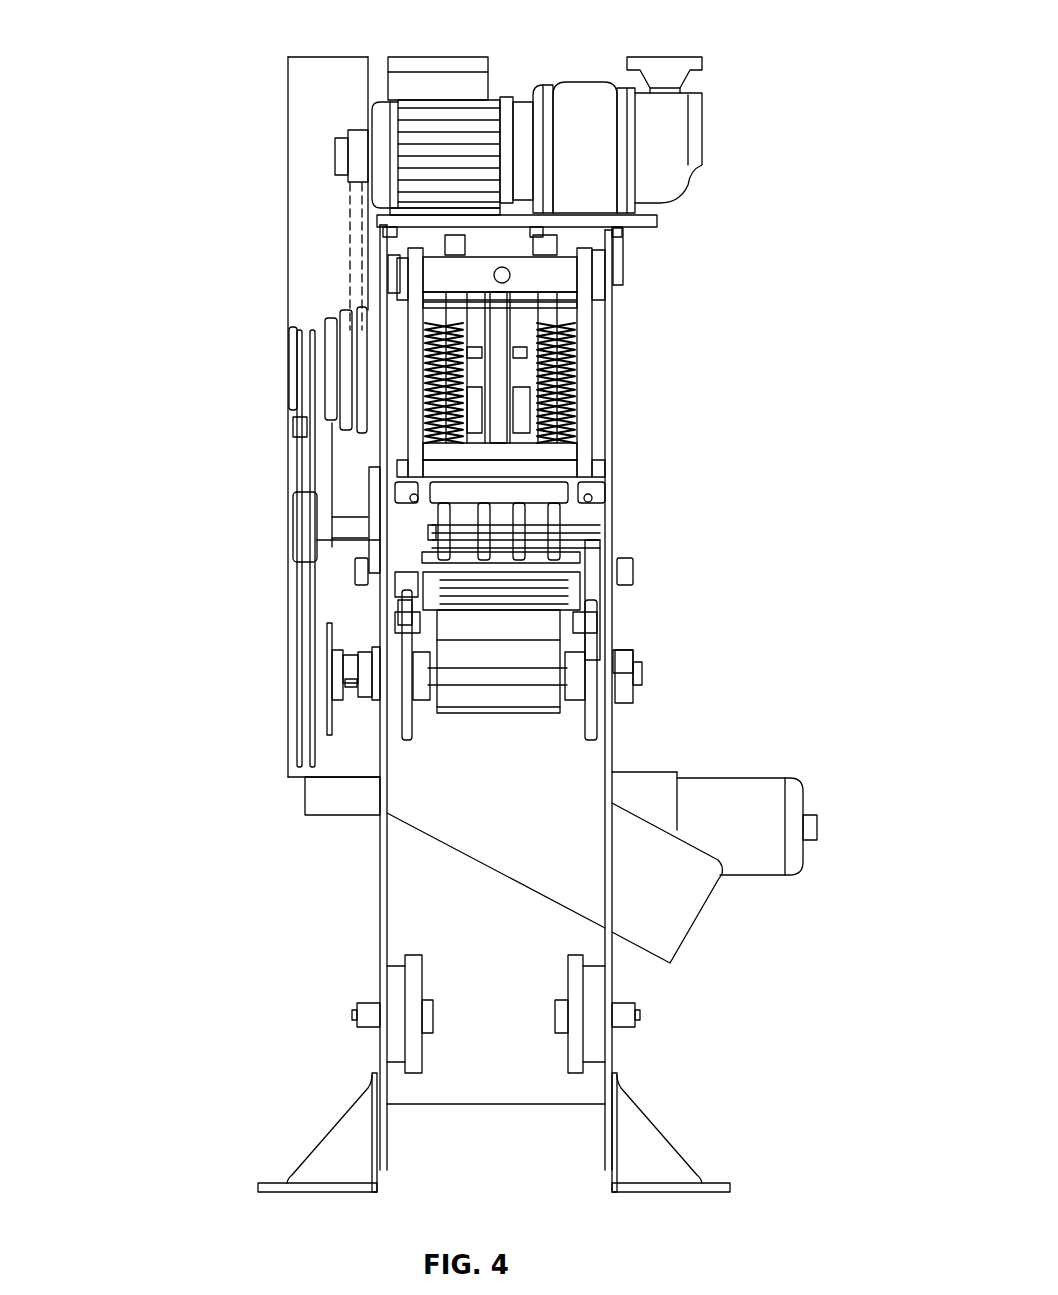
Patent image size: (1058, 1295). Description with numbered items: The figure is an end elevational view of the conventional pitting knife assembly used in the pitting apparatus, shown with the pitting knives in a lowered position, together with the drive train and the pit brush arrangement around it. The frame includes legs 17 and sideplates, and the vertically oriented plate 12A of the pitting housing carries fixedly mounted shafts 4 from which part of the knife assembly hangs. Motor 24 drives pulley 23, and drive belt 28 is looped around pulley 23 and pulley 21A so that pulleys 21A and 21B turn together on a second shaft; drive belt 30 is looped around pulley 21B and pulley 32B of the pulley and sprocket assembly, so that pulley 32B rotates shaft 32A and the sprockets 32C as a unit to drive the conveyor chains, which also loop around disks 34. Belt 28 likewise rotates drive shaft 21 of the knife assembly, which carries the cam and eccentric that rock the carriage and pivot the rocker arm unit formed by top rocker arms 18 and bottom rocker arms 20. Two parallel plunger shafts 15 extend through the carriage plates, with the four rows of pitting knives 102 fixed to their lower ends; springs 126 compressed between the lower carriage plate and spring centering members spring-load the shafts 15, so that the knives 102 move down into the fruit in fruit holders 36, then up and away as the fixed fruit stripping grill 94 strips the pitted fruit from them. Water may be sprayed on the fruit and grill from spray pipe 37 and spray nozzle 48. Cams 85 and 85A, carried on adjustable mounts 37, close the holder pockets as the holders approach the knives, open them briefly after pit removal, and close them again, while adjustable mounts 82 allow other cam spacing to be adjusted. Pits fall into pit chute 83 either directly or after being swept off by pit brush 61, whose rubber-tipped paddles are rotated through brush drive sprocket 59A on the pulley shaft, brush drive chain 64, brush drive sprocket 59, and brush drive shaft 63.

The shafts 4 is at (527, 263).
The frame post 12A is at (612, 755).
The plunger shafts 15 is at (457, 247).
The legs 17 is at (383, 1175).
The top rocker arms 18 is at (528, 352).
The bottom rocker arms 20 is at (567, 413).
The drive shaft 21 is at (597, 363).
The pulley 21A is at (358, 303).
The pulley 21B is at (293, 343).
The pulley 23 is at (345, 118).
The motor 24 is at (575, 82).
The drive belt 28 is at (350, 240).
The drive belt 30 is at (305, 435).
The shaft 32A is at (350, 687).
The pulley 32B is at (300, 720).
The sprockets 32C is at (410, 740).
The disks 34 is at (365, 1003).
The fruit holders 36 is at (520, 590).
The adjustable mounts 37 is at (587, 535).
The spray nozzle 48 is at (500, 532).
The brush drive sprocket 59 is at (323, 668).
The brush drive sprocket 59A is at (333, 320).
The pit brush 61 is at (498, 633).
The brush drive shaft 63 is at (360, 653).
The brush drive chain 64 is at (330, 480).
The adjustable mounts 82 is at (355, 575).
The pit chute 83 is at (707, 912).
The cam 85 is at (383, 610).
The cam 85A is at (590, 618).
The fruit stripping grill 94 is at (423, 553).
The pitting knives 102 is at (293, 503).
The springs 126 is at (567, 390).